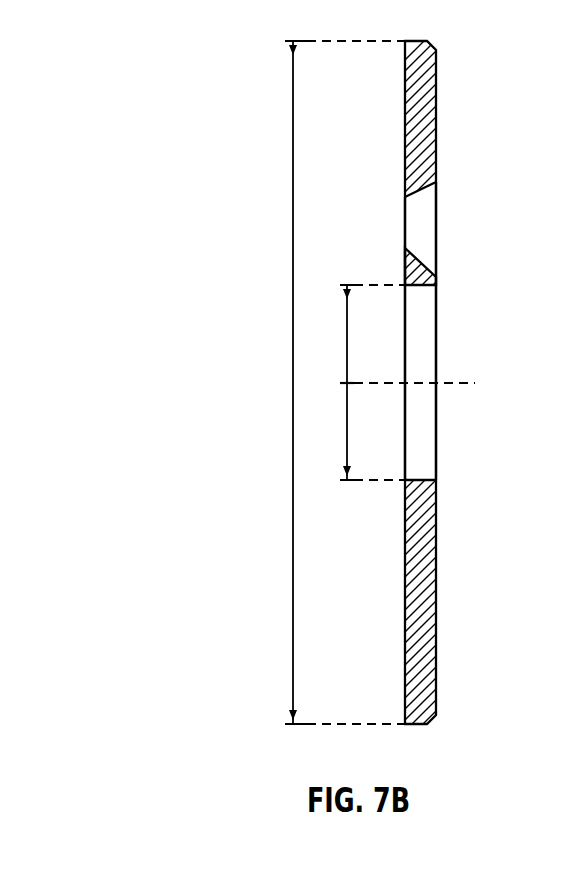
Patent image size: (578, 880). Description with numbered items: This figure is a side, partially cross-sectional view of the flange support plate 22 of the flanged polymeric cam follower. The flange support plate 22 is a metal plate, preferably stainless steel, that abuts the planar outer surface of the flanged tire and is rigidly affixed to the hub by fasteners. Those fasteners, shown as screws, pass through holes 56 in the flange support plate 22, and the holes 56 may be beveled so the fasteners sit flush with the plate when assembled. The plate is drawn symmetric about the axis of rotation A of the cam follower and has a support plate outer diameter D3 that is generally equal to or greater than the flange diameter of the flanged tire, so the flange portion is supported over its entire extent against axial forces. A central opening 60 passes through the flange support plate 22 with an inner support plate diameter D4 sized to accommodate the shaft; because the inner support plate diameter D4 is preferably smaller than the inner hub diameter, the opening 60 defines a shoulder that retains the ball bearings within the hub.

The flange support plate 22 is at (425, 580).
The holes 56 is at (420, 217).
The opening 60 is at (420, 289).
The axis of rotation A is at (468, 385).
The support plate outer diameter D3 is at (293, 381).
The inner support plate diameter D4 is at (347, 345).